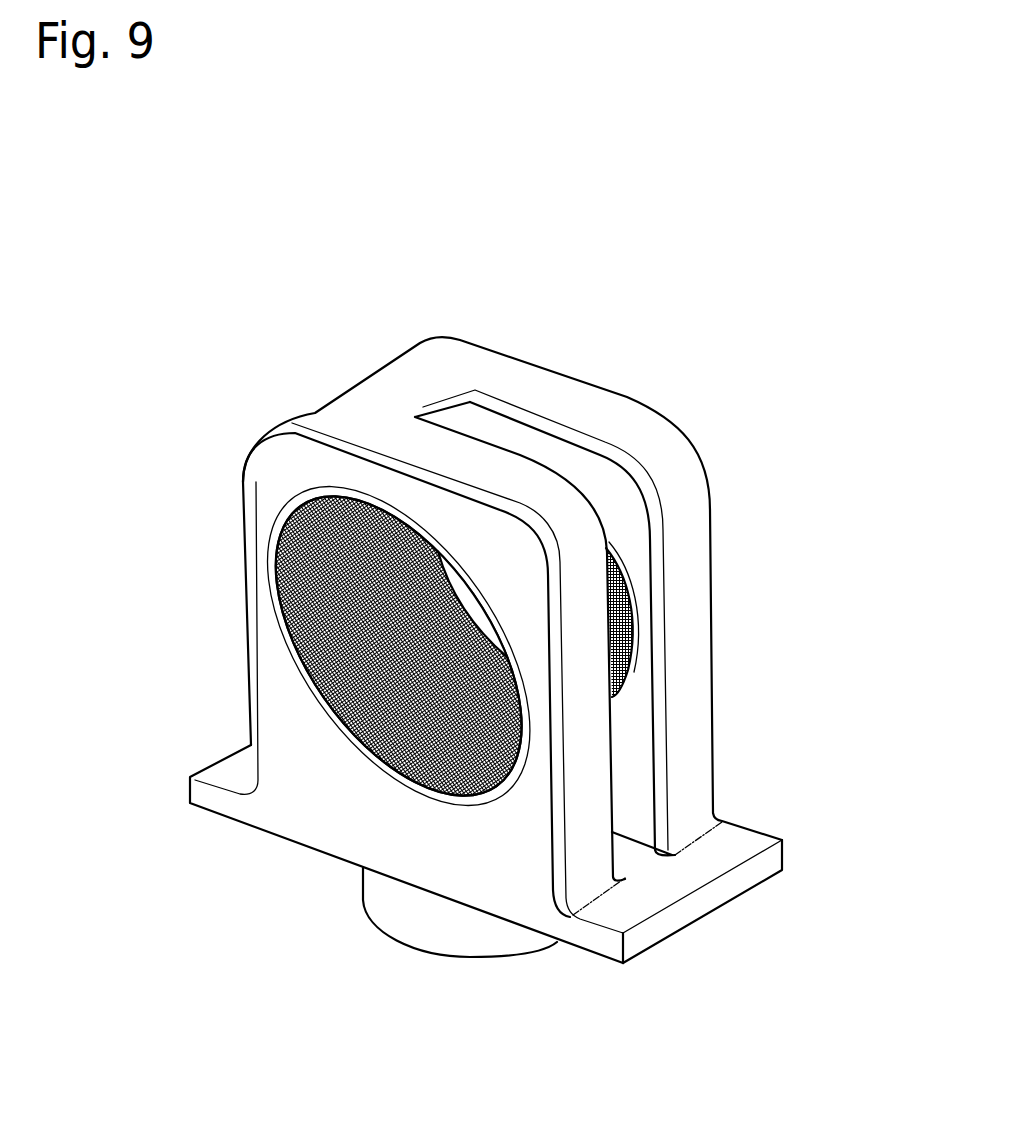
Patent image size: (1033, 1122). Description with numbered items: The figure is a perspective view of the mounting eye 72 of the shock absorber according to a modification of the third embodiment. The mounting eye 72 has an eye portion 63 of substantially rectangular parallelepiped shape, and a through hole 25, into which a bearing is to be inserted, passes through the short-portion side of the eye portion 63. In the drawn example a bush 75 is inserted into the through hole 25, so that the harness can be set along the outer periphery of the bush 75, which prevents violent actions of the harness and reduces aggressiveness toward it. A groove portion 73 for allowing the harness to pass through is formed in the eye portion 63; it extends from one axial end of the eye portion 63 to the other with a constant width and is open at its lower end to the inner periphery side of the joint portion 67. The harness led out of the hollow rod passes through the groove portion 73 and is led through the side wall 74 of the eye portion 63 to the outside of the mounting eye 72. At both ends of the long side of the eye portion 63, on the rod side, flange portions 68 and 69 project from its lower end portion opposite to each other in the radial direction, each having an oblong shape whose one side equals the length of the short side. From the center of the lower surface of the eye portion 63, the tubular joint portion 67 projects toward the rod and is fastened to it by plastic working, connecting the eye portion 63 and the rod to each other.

The mounting eye 72 is at (692, 340).
The eye portion 63 is at (439, 317).
The groove portion 73 is at (510, 437).
The side wall 74 is at (687, 670).
The through hole 25 is at (618, 557).
The bush 75 is at (290, 622).
The flange portion 68 is at (232, 773).
The flange portion 69 is at (733, 847).
The joint portion 67 is at (366, 945).